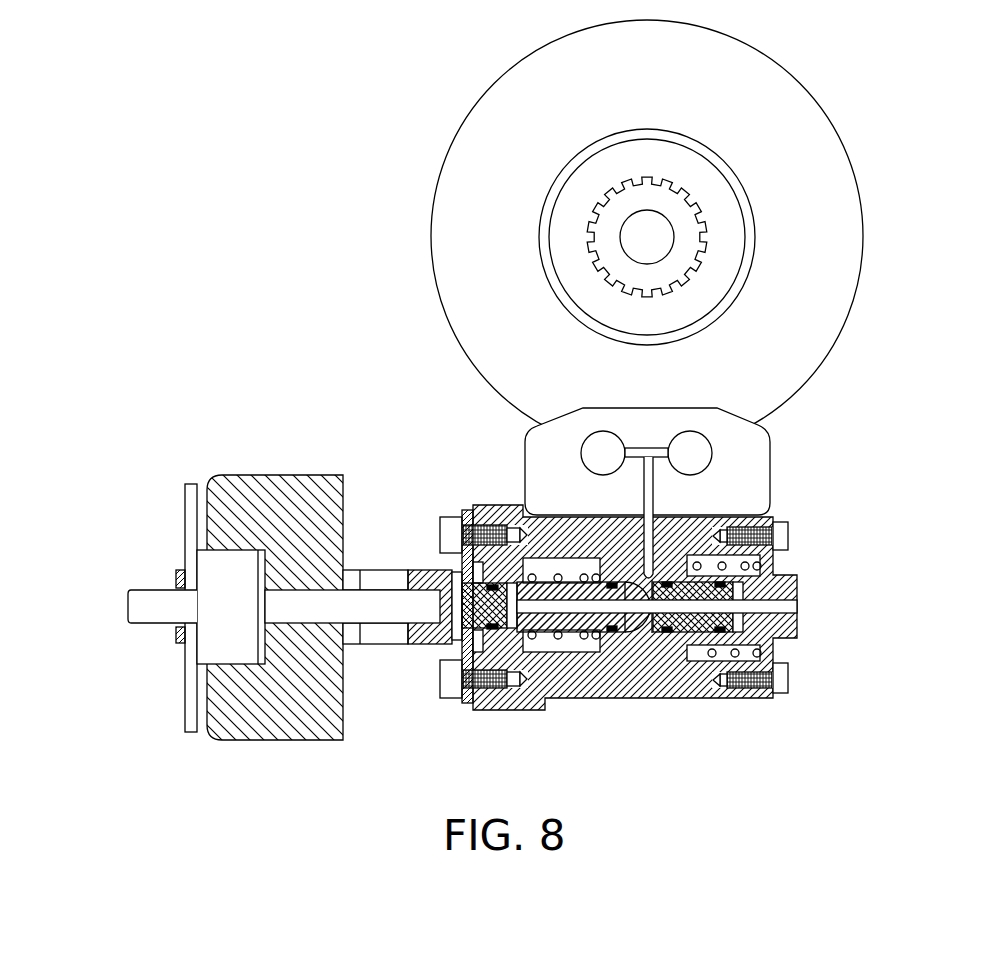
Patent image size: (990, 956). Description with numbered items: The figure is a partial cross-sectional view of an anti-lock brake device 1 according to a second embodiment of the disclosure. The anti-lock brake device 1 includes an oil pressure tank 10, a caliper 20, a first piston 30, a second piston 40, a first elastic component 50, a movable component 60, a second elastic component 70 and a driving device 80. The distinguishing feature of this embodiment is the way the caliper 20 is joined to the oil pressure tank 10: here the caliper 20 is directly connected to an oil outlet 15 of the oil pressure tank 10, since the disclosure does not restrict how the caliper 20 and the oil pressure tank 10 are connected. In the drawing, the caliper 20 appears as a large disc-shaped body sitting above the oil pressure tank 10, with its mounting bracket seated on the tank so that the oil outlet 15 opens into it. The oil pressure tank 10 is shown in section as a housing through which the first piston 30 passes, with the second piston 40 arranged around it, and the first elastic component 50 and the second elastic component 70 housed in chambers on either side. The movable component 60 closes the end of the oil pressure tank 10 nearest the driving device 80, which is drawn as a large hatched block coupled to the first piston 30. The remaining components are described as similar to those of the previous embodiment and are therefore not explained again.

The anti-lock brake device 1 is at (228, 193).
The oil pressure tank 10 is at (508, 514).
The oil outlet 15 is at (643, 570).
The caliper 20 is at (827, 235).
The first piston 30 is at (798, 585).
The second piston 40 is at (558, 623).
The first elastic component 50 is at (710, 653).
The movable component 60 is at (498, 640).
The second elastic component 70 is at (567, 627).
The driving device 80 is at (333, 466).